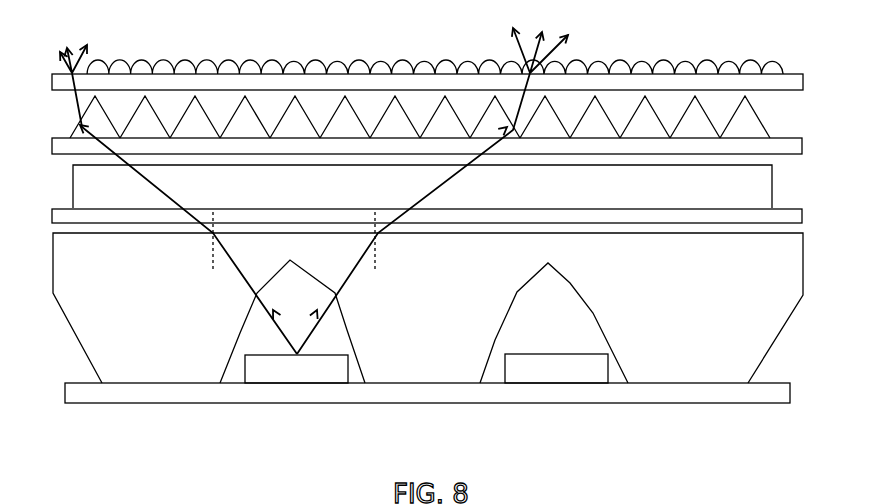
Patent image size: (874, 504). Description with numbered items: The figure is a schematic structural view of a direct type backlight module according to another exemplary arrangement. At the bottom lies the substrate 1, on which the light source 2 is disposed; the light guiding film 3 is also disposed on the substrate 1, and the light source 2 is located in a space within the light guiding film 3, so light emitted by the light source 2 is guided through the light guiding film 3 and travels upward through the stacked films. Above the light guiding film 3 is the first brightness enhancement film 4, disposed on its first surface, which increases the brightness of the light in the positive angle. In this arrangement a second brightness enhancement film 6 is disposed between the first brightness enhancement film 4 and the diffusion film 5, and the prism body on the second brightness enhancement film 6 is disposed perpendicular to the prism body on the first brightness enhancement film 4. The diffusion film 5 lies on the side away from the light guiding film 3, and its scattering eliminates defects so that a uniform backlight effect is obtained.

The substrate 1 is at (77, 393).
The light source 2 is at (298, 370).
The light guiding film 3 is at (747, 357).
The first brightness enhancement film 4 is at (753, 193).
The diffusion film 5 is at (772, 72).
The second brightness enhancement film 6 is at (745, 127).